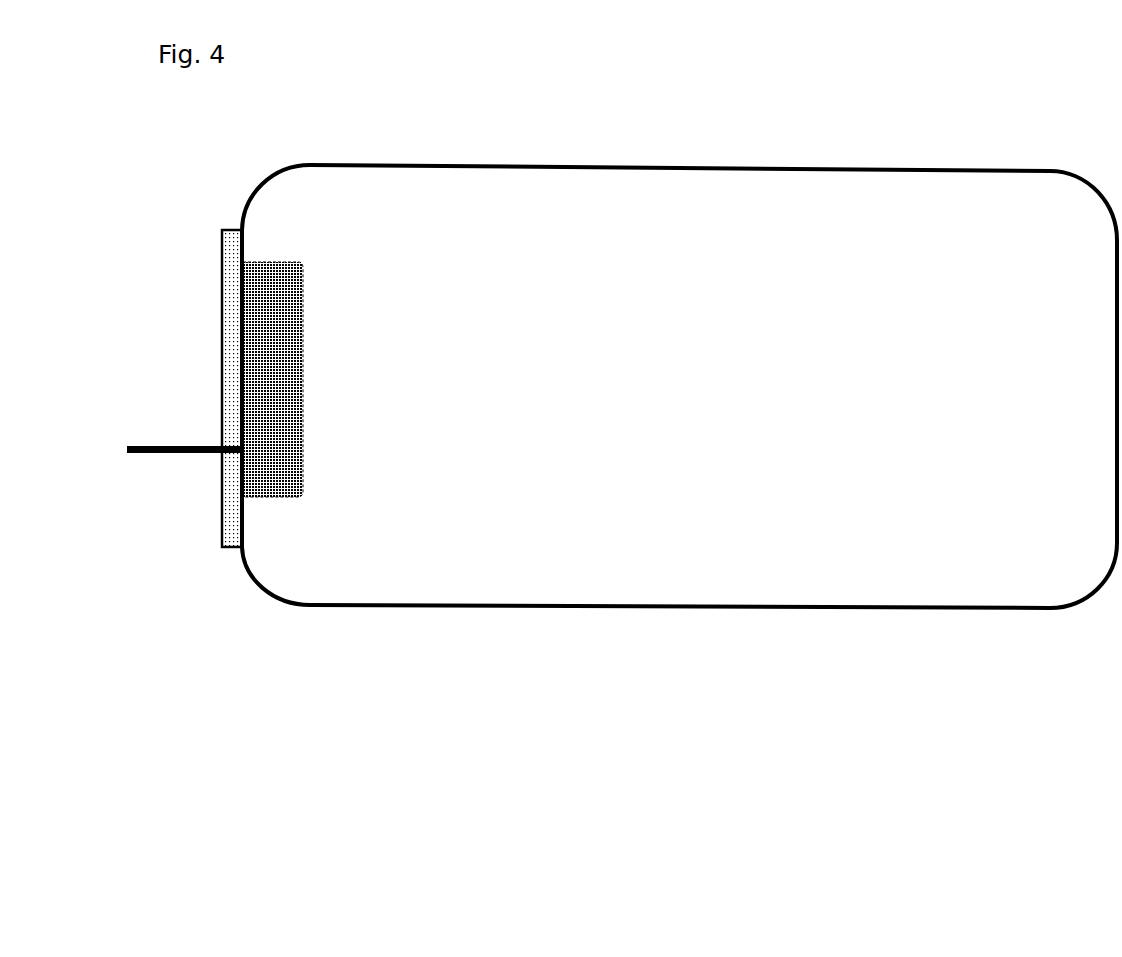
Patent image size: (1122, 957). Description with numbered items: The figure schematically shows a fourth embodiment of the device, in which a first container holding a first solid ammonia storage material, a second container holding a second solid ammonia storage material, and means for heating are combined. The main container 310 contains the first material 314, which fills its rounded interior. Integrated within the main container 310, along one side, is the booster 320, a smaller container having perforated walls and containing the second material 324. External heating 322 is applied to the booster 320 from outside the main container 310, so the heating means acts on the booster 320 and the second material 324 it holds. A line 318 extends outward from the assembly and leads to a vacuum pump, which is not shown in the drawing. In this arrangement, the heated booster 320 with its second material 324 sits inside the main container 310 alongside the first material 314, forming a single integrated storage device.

The main container 310 is at (763, 167).
The first material 314 is at (575, 382).
The line 318 is at (153, 452).
The booster 320 is at (272, 498).
The external heating 322 is at (213, 250).
The second material 324 is at (273, 379).